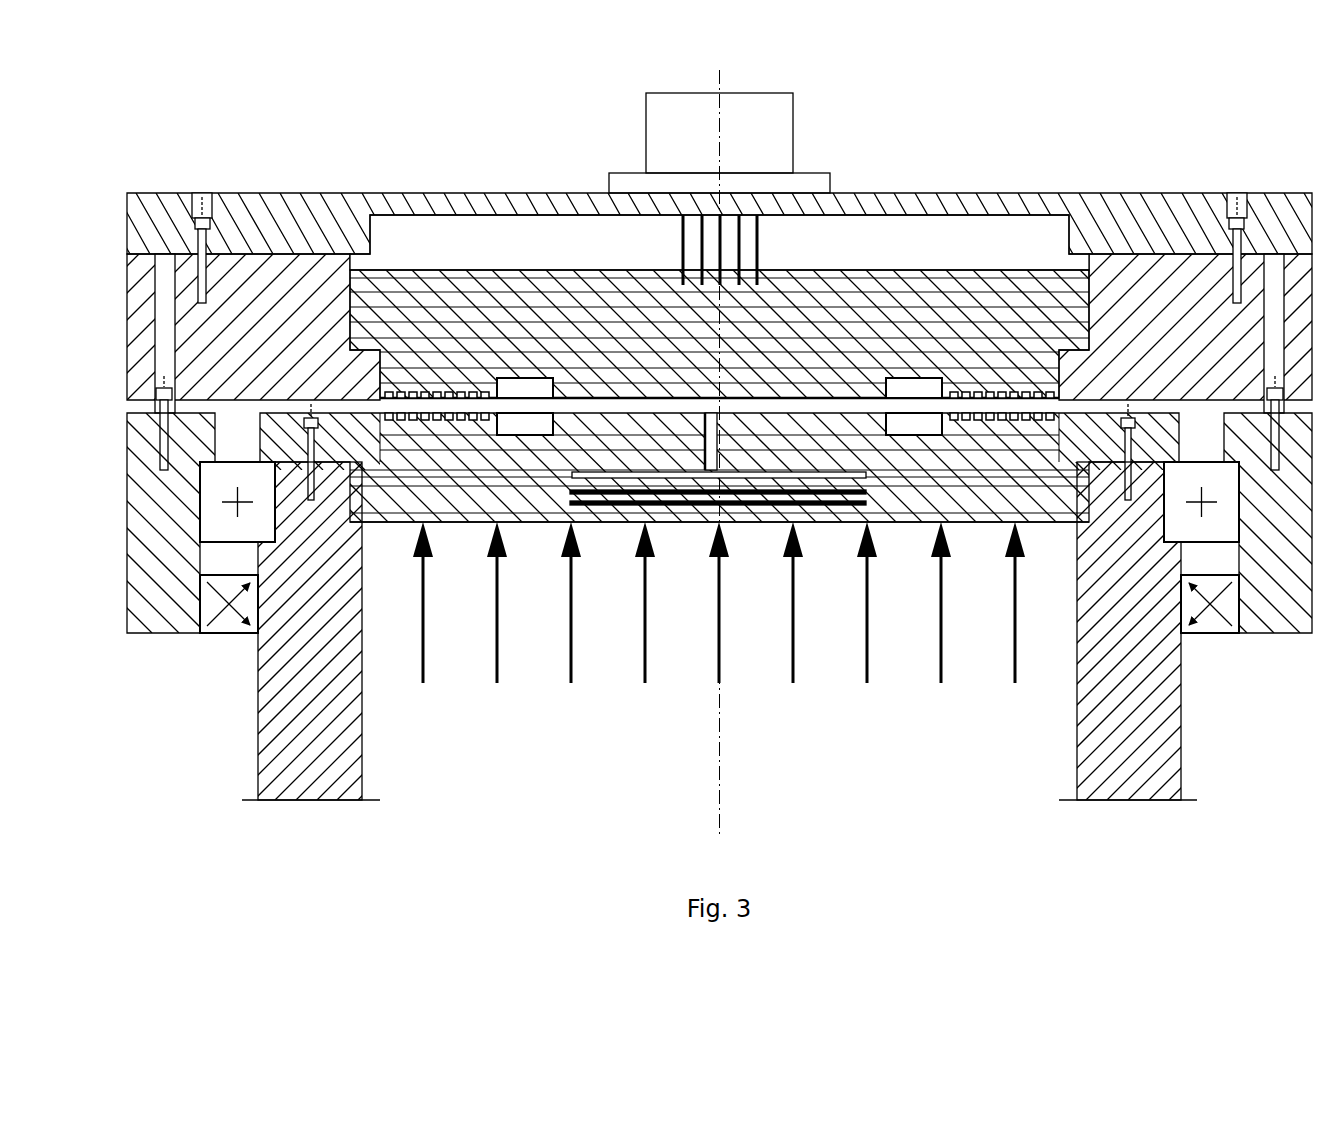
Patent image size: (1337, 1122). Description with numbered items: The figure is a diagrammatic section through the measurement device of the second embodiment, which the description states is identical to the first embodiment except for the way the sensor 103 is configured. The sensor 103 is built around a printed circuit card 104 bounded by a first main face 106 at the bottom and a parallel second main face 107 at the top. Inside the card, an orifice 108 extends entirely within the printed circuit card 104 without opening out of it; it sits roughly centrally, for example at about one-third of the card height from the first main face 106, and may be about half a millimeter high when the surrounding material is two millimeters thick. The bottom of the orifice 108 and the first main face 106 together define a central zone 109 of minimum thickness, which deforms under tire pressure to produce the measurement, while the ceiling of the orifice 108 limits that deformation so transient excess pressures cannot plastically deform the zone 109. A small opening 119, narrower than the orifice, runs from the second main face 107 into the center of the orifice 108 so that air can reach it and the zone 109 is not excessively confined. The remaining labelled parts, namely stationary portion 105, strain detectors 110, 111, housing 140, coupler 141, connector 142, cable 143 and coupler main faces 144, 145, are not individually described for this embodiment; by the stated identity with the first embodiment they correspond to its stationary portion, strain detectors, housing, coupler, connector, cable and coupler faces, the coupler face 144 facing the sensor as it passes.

The sensor 103 is at (238, 729).
The printed circuit card 104 is at (388, 522).
The housing 105 is at (433, 158).
The first main face 106 is at (1050, 522).
The second main face 107 is at (840, 430).
The orifice 108 is at (565, 478).
The central zone of minimum thickness 109 is at (685, 525).
The upper substrate layer 110 is at (818, 494).
The lower substrate layer 111 is at (745, 507).
The opening 119 is at (722, 420).
The top plate 140 is at (1140, 218).
The upper block 141 is at (1022, 300).
The spacer 142 is at (608, 185).
The actuator block 143 is at (648, 130).
The sensor block 144 is at (605, 405).
The pins 145 is at (825, 272).